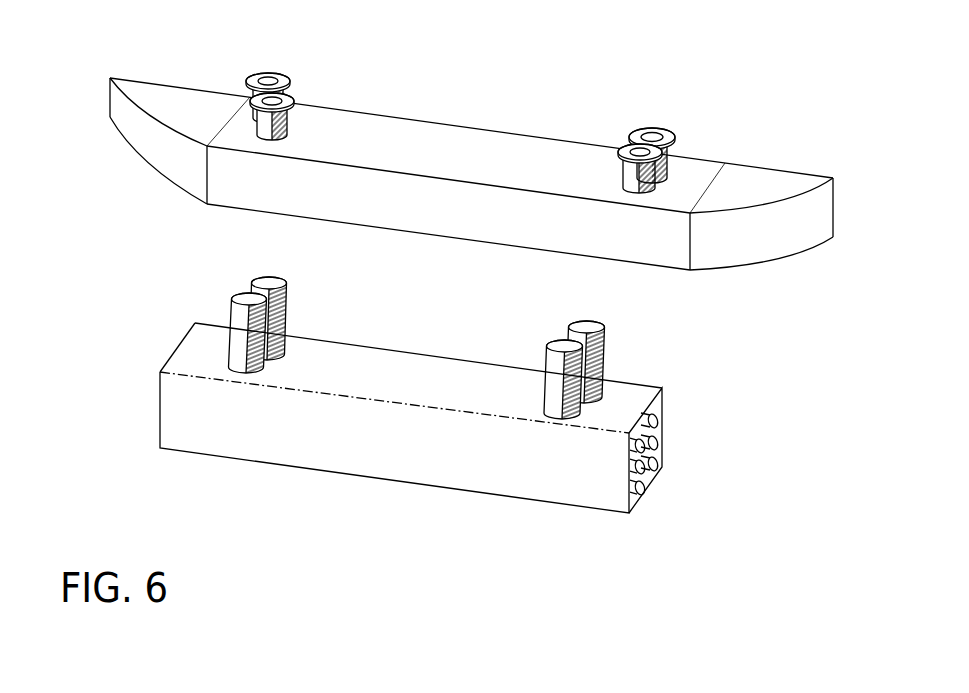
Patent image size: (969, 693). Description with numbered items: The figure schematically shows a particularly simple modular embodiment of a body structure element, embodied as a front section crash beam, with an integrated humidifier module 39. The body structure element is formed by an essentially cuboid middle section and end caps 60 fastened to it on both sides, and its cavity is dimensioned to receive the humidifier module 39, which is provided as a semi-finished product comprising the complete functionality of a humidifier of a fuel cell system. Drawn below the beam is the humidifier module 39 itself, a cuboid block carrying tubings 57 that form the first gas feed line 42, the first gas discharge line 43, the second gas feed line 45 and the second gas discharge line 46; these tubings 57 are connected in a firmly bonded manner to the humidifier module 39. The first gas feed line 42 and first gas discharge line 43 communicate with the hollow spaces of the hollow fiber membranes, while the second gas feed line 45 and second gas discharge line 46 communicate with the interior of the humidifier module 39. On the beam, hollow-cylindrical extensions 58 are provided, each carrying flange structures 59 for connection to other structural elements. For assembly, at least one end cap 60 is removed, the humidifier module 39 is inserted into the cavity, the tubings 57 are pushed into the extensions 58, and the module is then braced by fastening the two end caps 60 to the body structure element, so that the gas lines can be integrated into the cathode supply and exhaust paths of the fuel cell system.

The humidifier module 39 is at (287, 467).
The first gas feed line 42 is at (253, 80).
The first gas discharge line 43 is at (635, 134).
The second gas feed line 45 is at (625, 148).
The second gas discharge line 46 is at (288, 100).
The tubings 57 is at (265, 365).
The hollow-cylindrical extensions 58 is at (286, 122).
The flange structures 59 is at (280, 73).
The end caps 60 is at (165, 102).